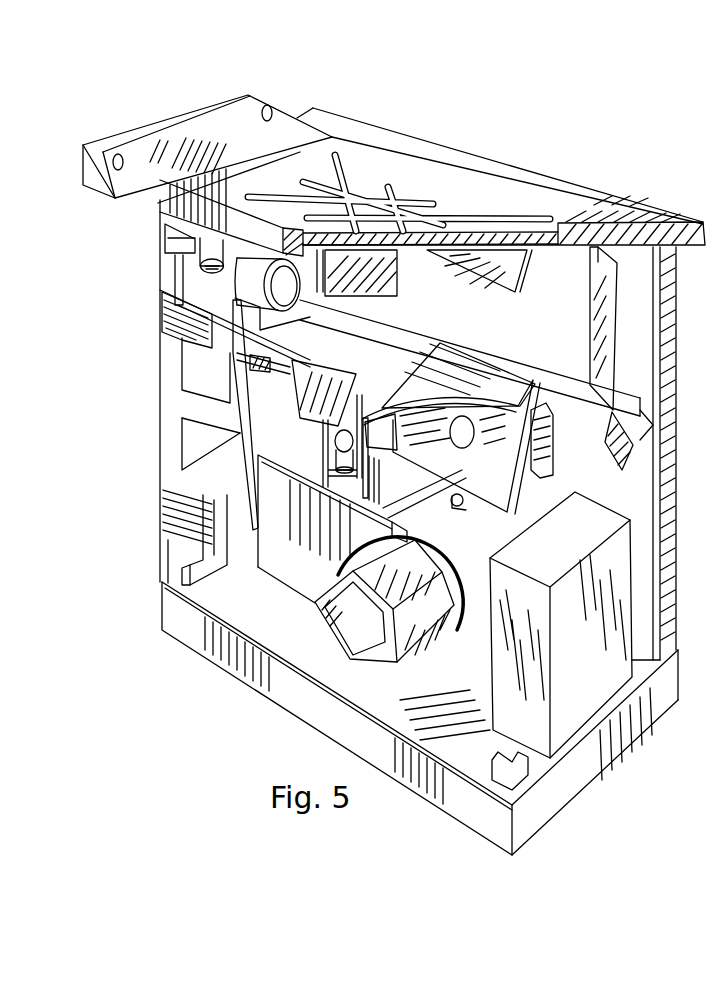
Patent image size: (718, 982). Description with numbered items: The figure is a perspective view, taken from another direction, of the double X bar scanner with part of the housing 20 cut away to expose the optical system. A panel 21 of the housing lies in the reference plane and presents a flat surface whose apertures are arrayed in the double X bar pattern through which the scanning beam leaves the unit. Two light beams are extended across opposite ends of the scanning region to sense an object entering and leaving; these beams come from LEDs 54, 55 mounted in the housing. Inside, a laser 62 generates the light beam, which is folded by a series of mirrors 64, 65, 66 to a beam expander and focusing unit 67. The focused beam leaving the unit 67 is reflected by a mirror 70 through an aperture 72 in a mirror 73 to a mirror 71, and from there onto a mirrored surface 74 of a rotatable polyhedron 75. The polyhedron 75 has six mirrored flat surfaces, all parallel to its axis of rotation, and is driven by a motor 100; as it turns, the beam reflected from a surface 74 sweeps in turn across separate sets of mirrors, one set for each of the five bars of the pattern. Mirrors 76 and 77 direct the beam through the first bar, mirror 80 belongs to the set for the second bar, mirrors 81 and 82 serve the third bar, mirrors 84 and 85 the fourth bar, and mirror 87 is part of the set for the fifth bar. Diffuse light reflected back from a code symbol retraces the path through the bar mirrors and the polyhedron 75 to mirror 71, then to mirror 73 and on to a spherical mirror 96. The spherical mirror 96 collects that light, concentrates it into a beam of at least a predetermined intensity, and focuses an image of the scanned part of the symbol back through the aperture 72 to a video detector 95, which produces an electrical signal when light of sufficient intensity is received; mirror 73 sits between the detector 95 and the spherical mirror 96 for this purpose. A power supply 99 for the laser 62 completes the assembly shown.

The housing 20 is at (394, 158).
The panel 21 is at (399, 180).
The LED 54 is at (269, 106).
The LED 55 is at (118, 154).
The laser 62 is at (245, 283).
The mirror 64 is at (198, 264).
The mirror 65 is at (195, 482).
The mirror 66 is at (352, 426).
The beam expander and focusing unit 67 is at (388, 463).
The mirror 70 is at (458, 506).
The mirror 71 is at (450, 370).
The aperture 72 is at (468, 447).
The mirror 73 is at (502, 488).
The mirrored surface 74 is at (405, 588).
The rotatable polyhedron 75 is at (313, 612).
The mirror 76 is at (318, 403).
The mirror 77 is at (528, 267).
The mirror 80 is at (620, 456).
The mirror 81 is at (268, 364).
The mirror 82 is at (382, 313).
The mirror 84 is at (244, 465).
The mirror 85 is at (385, 273).
The mirror 87 is at (598, 283).
The video detector 95 is at (545, 428).
The spherical mirror 96 is at (268, 457).
The power supply 99 is at (624, 568).
The motor 100 is at (470, 600).